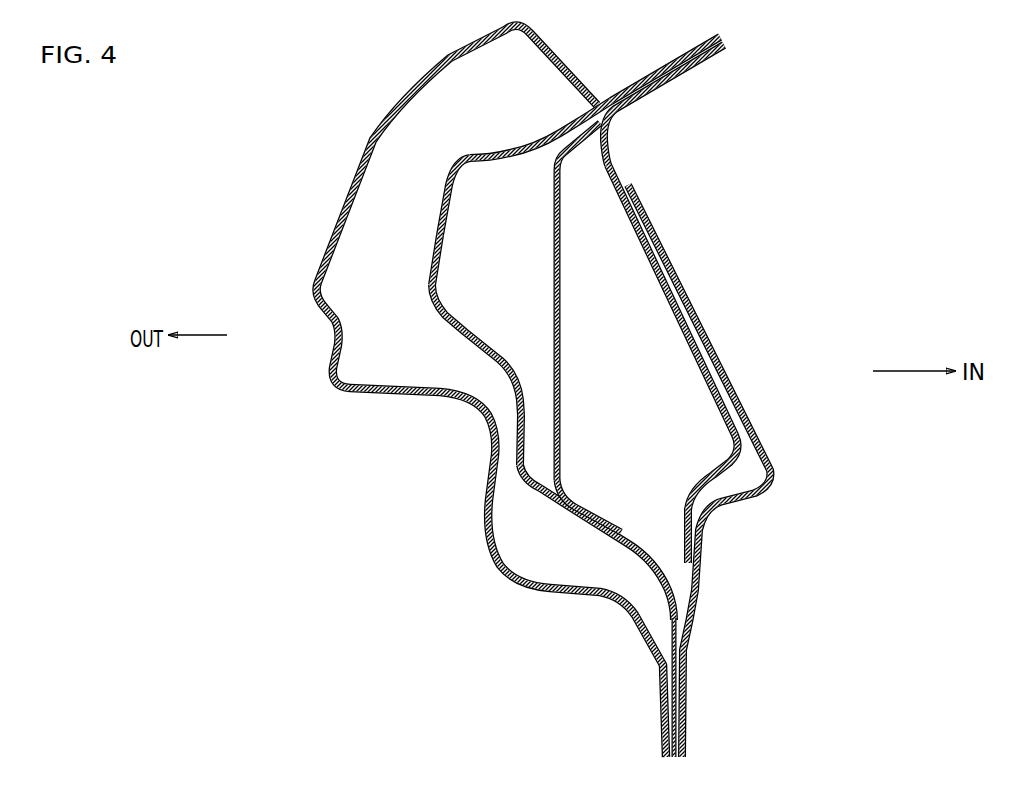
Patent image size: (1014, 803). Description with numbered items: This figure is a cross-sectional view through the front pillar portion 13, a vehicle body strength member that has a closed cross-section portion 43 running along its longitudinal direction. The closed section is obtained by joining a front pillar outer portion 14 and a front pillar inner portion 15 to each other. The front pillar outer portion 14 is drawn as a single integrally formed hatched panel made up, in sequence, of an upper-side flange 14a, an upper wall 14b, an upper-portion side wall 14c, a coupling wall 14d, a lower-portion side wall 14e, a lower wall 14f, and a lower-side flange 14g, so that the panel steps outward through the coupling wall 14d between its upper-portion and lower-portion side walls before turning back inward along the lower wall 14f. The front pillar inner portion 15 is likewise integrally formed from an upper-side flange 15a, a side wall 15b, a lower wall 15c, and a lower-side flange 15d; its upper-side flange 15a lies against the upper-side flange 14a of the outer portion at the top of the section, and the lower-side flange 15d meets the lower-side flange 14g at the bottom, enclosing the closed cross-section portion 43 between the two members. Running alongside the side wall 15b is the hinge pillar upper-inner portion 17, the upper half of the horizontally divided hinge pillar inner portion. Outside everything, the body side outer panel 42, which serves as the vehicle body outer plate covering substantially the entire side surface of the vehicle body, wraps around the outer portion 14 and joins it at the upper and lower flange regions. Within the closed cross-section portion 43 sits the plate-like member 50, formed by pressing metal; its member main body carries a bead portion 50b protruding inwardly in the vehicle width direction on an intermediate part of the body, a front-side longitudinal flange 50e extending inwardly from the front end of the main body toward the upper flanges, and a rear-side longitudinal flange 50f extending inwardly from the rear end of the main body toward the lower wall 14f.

The front pillar portion 13 is at (434, 233).
The front pillar outer portion 14 is at (541, 381).
The upper-side flange 14a is at (660, 76).
The upper wall 14b is at (507, 150).
The upper-portion side wall 14c is at (431, 256).
The coupling wall 14d is at (477, 348).
The lower-portion side wall 14e is at (513, 428).
The lower wall 14f is at (574, 517).
The lower-side flange 14g is at (662, 692).
The front pillar inner portion 15 is at (693, 401).
The upper-side flange 15a is at (690, 80).
The side wall 15b is at (658, 247).
The lower wall 15c is at (717, 470).
The lower-side flange 15d is at (682, 530).
The hinge pillar upper-inner portion 17 is at (700, 324).
The body side outer panel 42 is at (328, 240).
The closed cross-section portion 43 is at (637, 361).
The plate-like member 50 is at (562, 357).
The bead portion 50b is at (553, 308).
The front-side longitudinal flange 50e is at (578, 145).
The rear-side longitudinal flange 50f is at (615, 518).